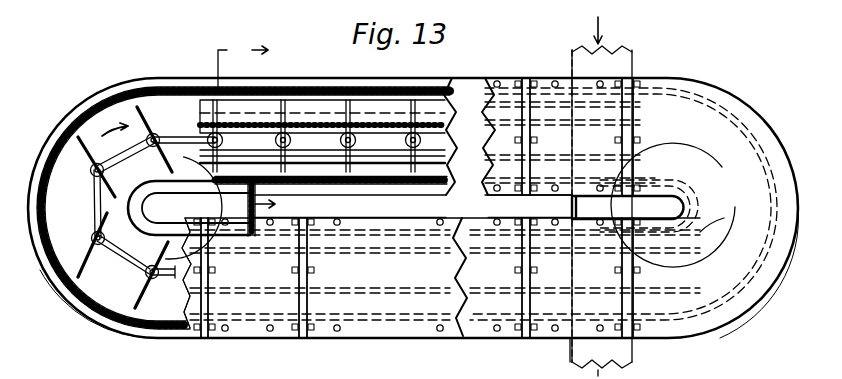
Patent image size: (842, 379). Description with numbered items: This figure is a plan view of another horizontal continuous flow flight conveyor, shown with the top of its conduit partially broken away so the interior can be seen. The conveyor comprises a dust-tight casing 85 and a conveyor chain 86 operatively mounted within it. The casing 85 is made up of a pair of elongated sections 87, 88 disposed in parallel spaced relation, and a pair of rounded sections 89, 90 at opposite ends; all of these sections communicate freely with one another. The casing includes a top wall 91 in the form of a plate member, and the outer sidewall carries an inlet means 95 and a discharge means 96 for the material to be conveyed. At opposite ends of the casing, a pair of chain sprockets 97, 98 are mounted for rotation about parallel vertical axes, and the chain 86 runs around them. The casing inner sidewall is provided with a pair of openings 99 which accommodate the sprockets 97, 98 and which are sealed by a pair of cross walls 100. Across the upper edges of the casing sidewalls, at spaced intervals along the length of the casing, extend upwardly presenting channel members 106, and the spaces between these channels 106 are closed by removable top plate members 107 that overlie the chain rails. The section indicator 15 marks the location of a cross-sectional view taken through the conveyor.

The section line indicator 15 is at (244, 128).
The casing 85 is at (740, 135).
The conveyor chain 86 is at (380, 138).
The elongated section 87 is at (393, 307).
The elongated section 88 is at (318, 103).
The rounded section 89 is at (100, 290).
The rounded section 90 is at (762, 287).
The top wall 91 is at (170, 273).
The inlet means 95 is at (608, 62).
The discharge means 96 is at (570, 353).
The chain sprocket 97 is at (191, 207).
The chain sprocket 98 is at (673, 205).
The opening 99 is at (128, 233).
The cross wall 100 is at (272, 200).
The channel member 106 is at (237, 280).
The top plate member 107 is at (404, 277).